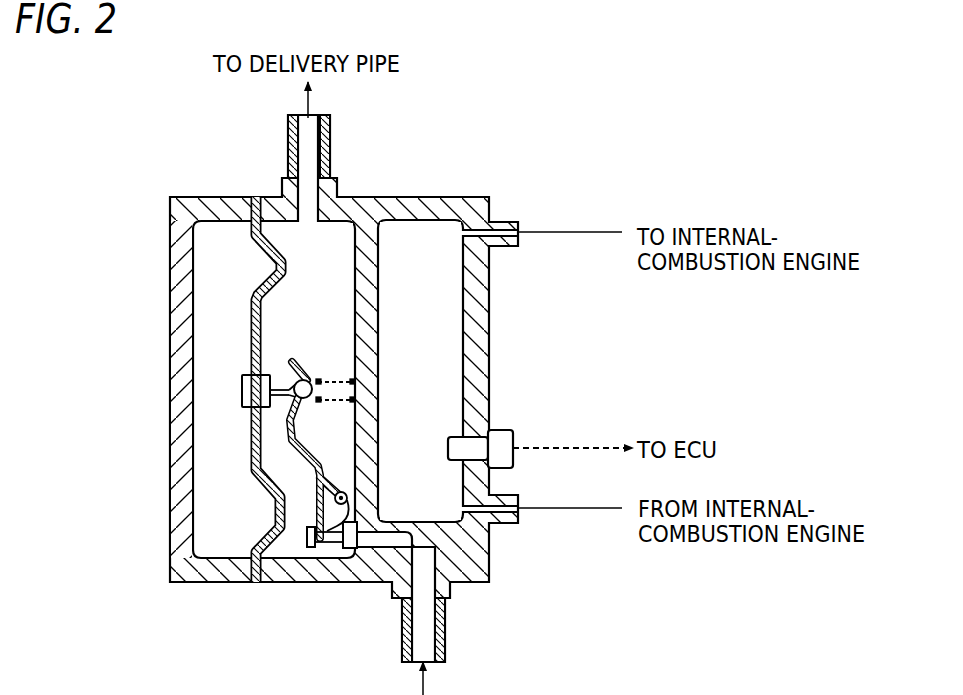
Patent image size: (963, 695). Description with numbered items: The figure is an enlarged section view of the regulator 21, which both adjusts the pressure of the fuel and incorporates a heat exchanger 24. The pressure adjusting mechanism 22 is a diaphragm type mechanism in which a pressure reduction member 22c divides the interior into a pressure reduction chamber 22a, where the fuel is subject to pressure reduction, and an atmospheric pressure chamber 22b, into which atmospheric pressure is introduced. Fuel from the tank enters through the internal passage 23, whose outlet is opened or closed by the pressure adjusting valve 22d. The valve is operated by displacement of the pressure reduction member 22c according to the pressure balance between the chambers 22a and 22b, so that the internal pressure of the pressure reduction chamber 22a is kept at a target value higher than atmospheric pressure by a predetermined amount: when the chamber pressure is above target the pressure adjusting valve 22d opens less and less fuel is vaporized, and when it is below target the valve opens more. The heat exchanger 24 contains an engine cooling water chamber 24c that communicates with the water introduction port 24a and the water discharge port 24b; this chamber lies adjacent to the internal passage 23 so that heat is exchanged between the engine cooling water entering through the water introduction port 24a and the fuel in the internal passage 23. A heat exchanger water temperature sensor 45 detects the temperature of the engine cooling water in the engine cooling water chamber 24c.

The regulator 21 is at (130, 130).
The pressure adjusting mechanism 22 is at (252, 590).
The pressure reduction chamber 22a is at (334, 228).
The atmospheric pressure chamber 22b is at (210, 283).
The pressure reduction member 22c is at (265, 340).
The pressure adjusting valve 22d is at (337, 559).
The internal passage 23 is at (445, 626).
The heat exchanger 24 is at (469, 548).
The water introduction port 24a is at (522, 513).
The water discharge port 24b is at (519, 234).
The engine cooling water chamber 24c is at (445, 273).
The heat exchanger water temperature sensor 45 is at (498, 431).